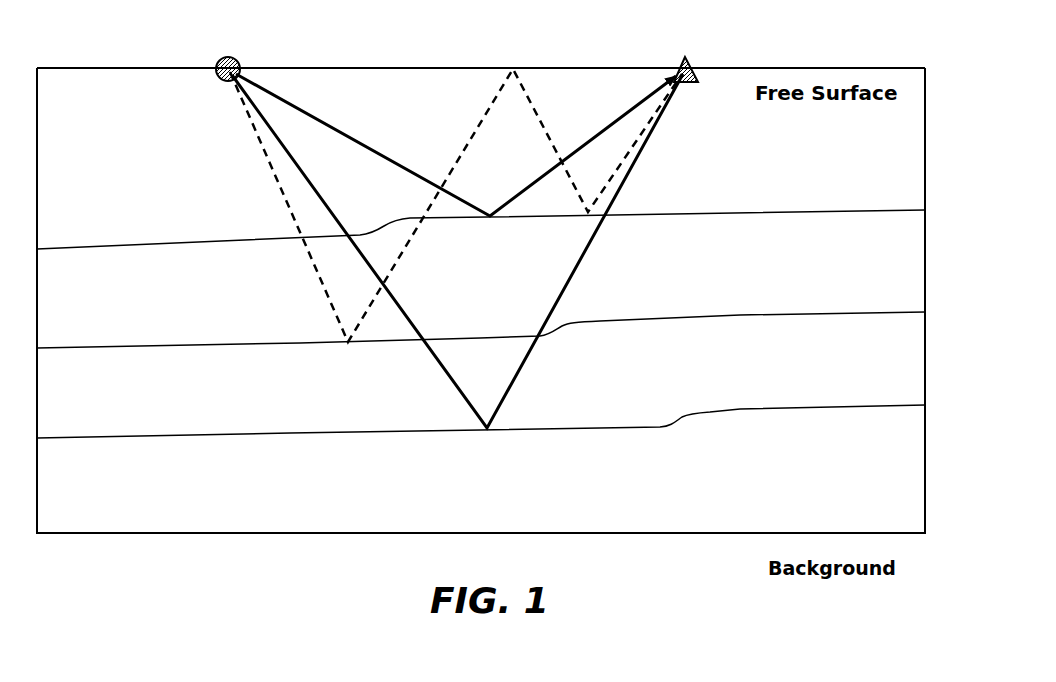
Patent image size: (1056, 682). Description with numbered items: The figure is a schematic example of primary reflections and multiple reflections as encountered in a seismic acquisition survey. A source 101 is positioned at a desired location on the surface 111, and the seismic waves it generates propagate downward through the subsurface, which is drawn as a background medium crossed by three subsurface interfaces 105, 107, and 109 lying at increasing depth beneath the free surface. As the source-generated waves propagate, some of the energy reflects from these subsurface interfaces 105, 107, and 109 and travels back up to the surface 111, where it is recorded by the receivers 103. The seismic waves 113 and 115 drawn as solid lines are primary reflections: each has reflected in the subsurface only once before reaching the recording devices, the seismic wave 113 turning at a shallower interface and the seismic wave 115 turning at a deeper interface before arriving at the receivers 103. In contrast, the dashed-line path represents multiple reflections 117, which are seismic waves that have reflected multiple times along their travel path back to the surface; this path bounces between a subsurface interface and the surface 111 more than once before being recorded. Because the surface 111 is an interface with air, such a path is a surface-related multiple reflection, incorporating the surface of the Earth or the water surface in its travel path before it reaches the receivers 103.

The source 101 is at (217, 58).
The receivers 103 is at (692, 58).
The subsurface interface 105 is at (900, 210).
The subsurface interface 107 is at (900, 312).
The subsurface interface 109 is at (900, 405).
The surface 111 is at (370, 68).
The seismic wave 113 is at (342, 130).
The seismic wave 115 is at (402, 308).
The multiple reflections 117 is at (315, 260).